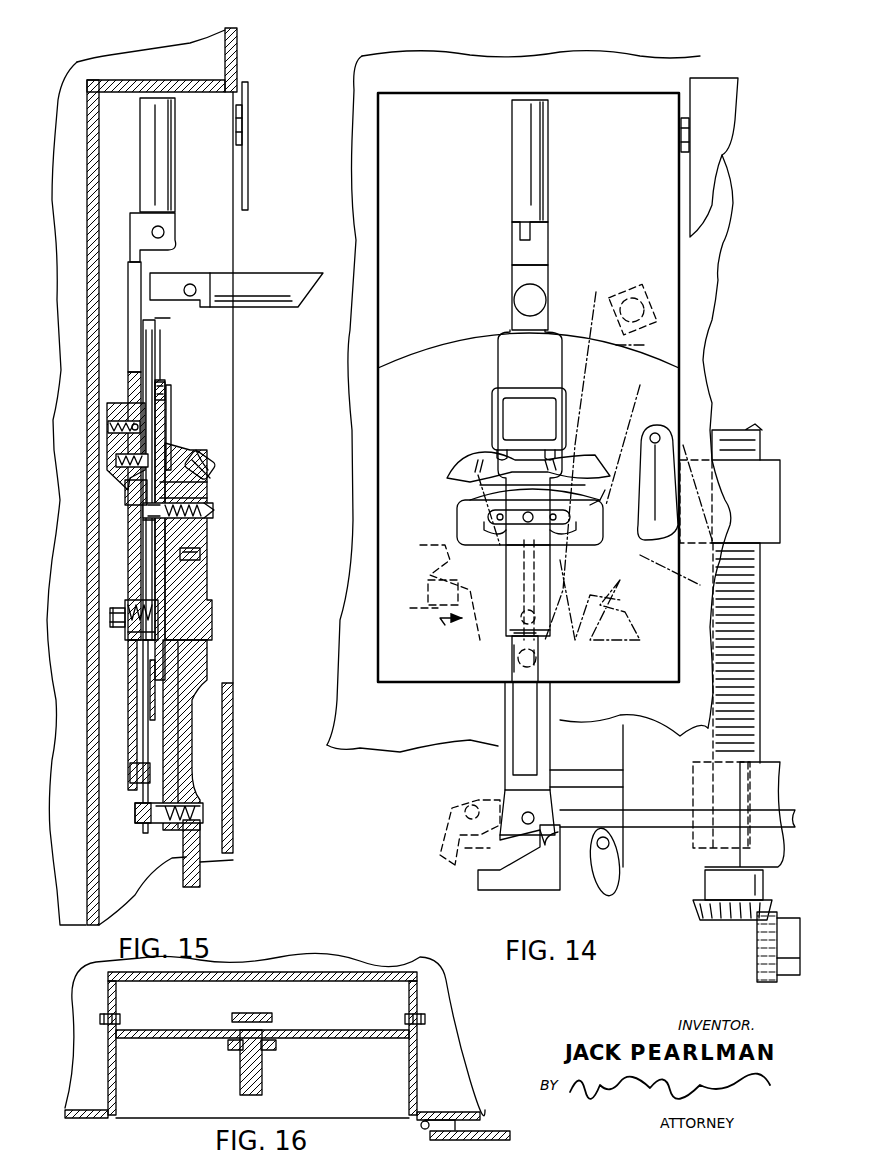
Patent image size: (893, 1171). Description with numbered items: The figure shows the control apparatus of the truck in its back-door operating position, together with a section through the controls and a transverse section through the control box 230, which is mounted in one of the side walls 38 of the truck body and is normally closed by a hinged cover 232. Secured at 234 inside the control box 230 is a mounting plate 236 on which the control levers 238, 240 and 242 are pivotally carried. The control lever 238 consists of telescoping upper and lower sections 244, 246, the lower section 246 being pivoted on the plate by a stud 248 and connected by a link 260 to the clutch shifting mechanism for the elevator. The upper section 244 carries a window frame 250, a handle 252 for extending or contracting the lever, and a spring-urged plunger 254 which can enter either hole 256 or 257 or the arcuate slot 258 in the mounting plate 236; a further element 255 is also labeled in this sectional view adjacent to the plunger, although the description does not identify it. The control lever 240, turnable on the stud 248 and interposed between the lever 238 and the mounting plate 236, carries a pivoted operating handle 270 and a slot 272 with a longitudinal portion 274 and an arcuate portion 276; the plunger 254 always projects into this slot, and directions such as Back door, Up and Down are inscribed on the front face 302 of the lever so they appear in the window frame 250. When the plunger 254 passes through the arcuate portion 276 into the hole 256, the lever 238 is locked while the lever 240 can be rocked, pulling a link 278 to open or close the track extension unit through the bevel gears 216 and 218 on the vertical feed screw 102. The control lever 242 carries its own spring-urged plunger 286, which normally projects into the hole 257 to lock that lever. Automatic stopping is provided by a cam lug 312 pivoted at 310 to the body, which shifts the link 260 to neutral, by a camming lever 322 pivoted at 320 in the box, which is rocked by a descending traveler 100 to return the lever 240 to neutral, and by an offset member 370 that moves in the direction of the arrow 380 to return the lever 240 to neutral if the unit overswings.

In FIG. 15, the side wall 38 is at (232, 60).
In FIG. 14, the side wall 38 is at (414, 60).
In FIG. 16, the side wall 38 is at (452, 1112).
In FIG. 14, the traveler 100 is at (770, 475).
In FIG. 14, the vertical feed screw 102 is at (762, 578).
In FIG. 14, the bevel gear 216 is at (758, 970).
In FIG. 14, the bevel gear 218 is at (735, 918).
In FIG. 15, the control box 230 is at (200, 82).
In FIG. 14, the control box 230 is at (385, 305).
In FIG. 16, the control box 230 is at (420, 1065).
In FIG. 15, the hinged cover 232 is at (250, 160).
In FIG. 14, the hinged cover 232 is at (720, 125).
In FIG. 16, the hinged cover 232 is at (432, 1140).
In FIG. 16, the securing point 234 is at (102, 1015).
In FIG. 15, the mounting plate 236 is at (168, 428).
In FIG. 14, the mounting plate 236 is at (442, 345).
In FIG. 16, the mounting plate 236 is at (325, 1030).
In FIG. 15, the control lever 238 is at (214, 628).
In FIG. 14, the control lever 238 is at (500, 642).
In FIG. 15, the control lever 240 is at (160, 368).
In FIG. 14, the control lever 240 is at (430, 292).
In FIG. 15, the control lever 242 is at (128, 322).
In FIG. 14, the control lever 242 is at (550, 262).
In FIG. 15, the upper section 244 is at (212, 570).
In FIG. 14, the upper section 244 is at (540, 620).
In FIG. 15, the lower section 246 is at (184, 672).
In FIG. 14, the lower section 246 is at (550, 675).
In FIG. 16, the lower section 246 is at (262, 1085).
In FIG. 15, the pivot stud 248 is at (134, 650).
In FIG. 14, the pivot stud 248 is at (515, 658).
In FIG. 16, the pivot stud 248 is at (245, 1030).
In FIG. 15, the window frame 250 is at (172, 400).
In FIG. 14, the window frame 250 is at (492, 415).
In FIG. 15, the handle 252 is at (208, 468).
In FIG. 14, the handle 252 is at (465, 465).
In FIG. 15, the spring-urged plunger 254 is at (150, 475).
In FIG. 15, the locking screw 255 is at (214, 512).
In FIG. 15, the hole 256 is at (148, 522).
In FIG. 14, the hole 256 is at (505, 552).
In FIG. 15, the hole 257 is at (150, 490).
In FIG. 15, the arcuate slot 258 is at (212, 480).
In FIG. 14, the arcuate slot 258 is at (475, 495).
In FIG. 15, the link 260 is at (200, 875).
In FIG. 14, the link 260 is at (560, 872).
In FIG. 15, the pivoted operating handle 270 is at (266, 270).
In FIG. 15, the slot 272 is at (210, 495).
In FIG. 14, the slot 272 is at (480, 520).
In FIG. 15, the longitudinal portion 274 is at (190, 452).
In FIG. 15, the arcuate portion 276 is at (205, 548).
In FIG. 14, the arcuate portion 276 is at (603, 520).
In FIG. 15, the link 278 is at (142, 825).
In FIG. 14, the link 278 is at (555, 812).
In FIG. 15, the spring-urged plunger 286 is at (140, 470).
In FIG. 15, the front face 302 is at (172, 340).
In FIG. 14, the front face 302 is at (490, 372).
In FIG. 14, the pivot 310 is at (610, 843).
In FIG. 14, the cam lug 312 is at (614, 884).
In FIG. 14, the pivot 320 is at (658, 425).
In FIG. 14, the camming lever 322 is at (630, 612).
In FIG. 14, the offset member 370 is at (414, 623).
In FIG. 14, the arrow 380 is at (447, 634).